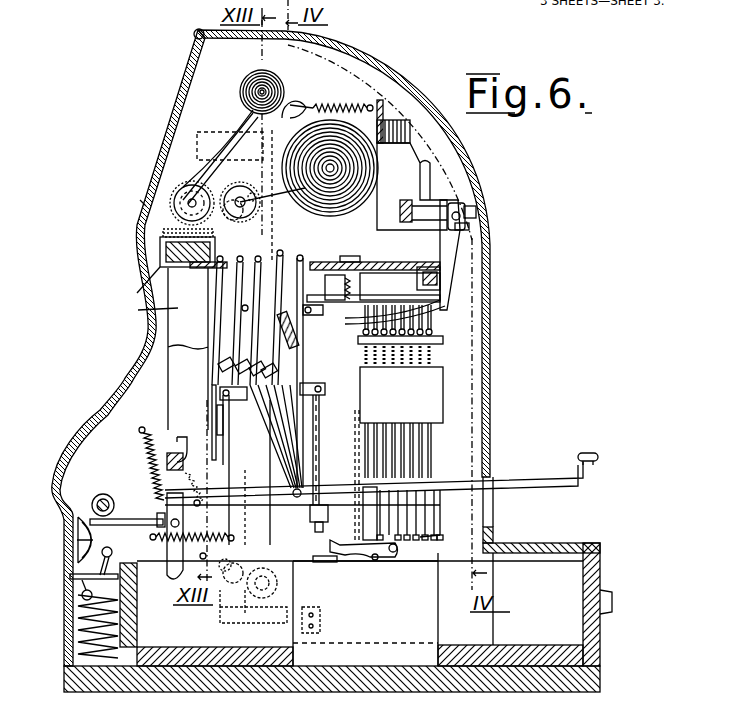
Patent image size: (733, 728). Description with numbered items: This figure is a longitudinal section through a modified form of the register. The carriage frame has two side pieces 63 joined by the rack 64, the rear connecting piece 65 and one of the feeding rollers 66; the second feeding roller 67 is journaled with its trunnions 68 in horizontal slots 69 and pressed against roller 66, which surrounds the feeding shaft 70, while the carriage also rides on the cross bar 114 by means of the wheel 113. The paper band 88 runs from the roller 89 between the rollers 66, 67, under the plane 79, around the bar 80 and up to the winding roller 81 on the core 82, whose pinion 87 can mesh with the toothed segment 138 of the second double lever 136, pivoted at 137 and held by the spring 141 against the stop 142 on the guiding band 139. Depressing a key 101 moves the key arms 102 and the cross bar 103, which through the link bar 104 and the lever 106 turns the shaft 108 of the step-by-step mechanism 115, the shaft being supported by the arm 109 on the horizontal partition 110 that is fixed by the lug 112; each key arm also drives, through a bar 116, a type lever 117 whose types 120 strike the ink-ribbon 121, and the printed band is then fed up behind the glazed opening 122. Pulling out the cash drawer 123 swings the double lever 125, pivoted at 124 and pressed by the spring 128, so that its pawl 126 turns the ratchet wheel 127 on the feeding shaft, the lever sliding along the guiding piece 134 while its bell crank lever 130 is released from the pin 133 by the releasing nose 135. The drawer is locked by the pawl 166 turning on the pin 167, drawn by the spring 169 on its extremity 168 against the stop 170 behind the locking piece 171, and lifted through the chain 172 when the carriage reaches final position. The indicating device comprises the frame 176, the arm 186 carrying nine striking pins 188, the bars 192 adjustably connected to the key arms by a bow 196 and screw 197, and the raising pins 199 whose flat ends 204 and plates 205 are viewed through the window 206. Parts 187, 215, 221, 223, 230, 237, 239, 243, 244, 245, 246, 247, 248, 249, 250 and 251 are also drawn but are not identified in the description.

The side pieces 63 is at (230, 146).
The rack 64 is at (400, 212).
The rear connecting piece 65 is at (476, 211).
The feeding roller 66 is at (183, 183).
The feeding roller 67 is at (237, 198).
The trunnions 68 is at (243, 200).
The horizontal slots 69 is at (200, 196).
The feeding shaft 70 is at (177, 195).
The plane 79 is at (160, 252).
The bar or roller 80 is at (160, 235).
The winding roller 81 is at (245, 90).
The core or shaft 82 is at (240, 80).
The pinion 87 is at (285, 98).
The paper band 88 is at (214, 126).
The roller 89 is at (320, 193).
The key 101 is at (580, 453).
The key arms 102 is at (515, 482).
The cross bar 103 is at (316, 505).
The link bar 104 is at (310, 447).
The forwardly projecting lever 106 is at (385, 334).
The shaft 108 is at (440, 278).
The arm 109 is at (358, 258).
The horizontal partition 110 is at (317, 262).
The lug 112 is at (380, 286).
The wheel 113 is at (462, 204).
The cross bar 114 is at (469, 226).
The step-by-step mechanism 115 is at (462, 255).
The bar 116 is at (292, 418).
The type lever 117 is at (237, 330).
The types 120 is at (212, 365).
The ink-ribbon 121 is at (140, 310).
The glazed opening 122 is at (140, 203).
The cash drawer 123 is at (365, 592).
The pivot 124 is at (242, 308).
The double lever 125 is at (255, 513).
The pawl 126 is at (188, 349).
The ratchet wheel 127 is at (177, 183).
The spring 128 is at (195, 540).
The bell crank lever 130 is at (247, 604).
The pin 133 is at (200, 618).
The guiding piece 134 is at (249, 620).
The releasing nose 135 is at (305, 608).
The second double lever 136 is at (250, 112).
The pivot 137 is at (303, 340).
The toothed segment 138 is at (296, 104).
The guiding band 139 is at (306, 387).
The spring 141 is at (336, 105).
The stop 142 is at (243, 403).
The pawl 166 is at (367, 545).
The pin 167 is at (398, 555).
The extremity 168 is at (420, 545).
The spring 169 is at (413, 532).
The stop 170 is at (376, 560).
The locking piece 171 is at (327, 562).
The chain 172 is at (352, 505).
The frame 176 is at (401, 395).
The arm 186 is at (455, 298).
The bar 187 is at (437, 345).
The striking pins 188 is at (437, 360).
The bars 192 is at (428, 438).
The bow 196 is at (437, 503).
The vertically adjustable screw 197 is at (440, 535).
The raising pins 199 is at (433, 315).
The upper flat ends 204 is at (397, 133).
The plate 205 is at (381, 100).
The window 206 is at (408, 100).
The rail 215 is at (212, 388).
The hook 221 is at (183, 438).
The block 223 is at (168, 452).
The slide 230 is at (212, 418).
The rod 237 is at (248, 450).
The rod 239 is at (248, 478).
The spring 243 is at (146, 455).
The cam 244 is at (120, 485).
The rod 245 is at (160, 515).
The paddle 246 is at (170, 547).
The spring 247 is at (190, 482).
The spring 248 is at (200, 506).
The spring 249 is at (120, 630).
The lever 250 is at (133, 573).
The pin 251 is at (200, 504).